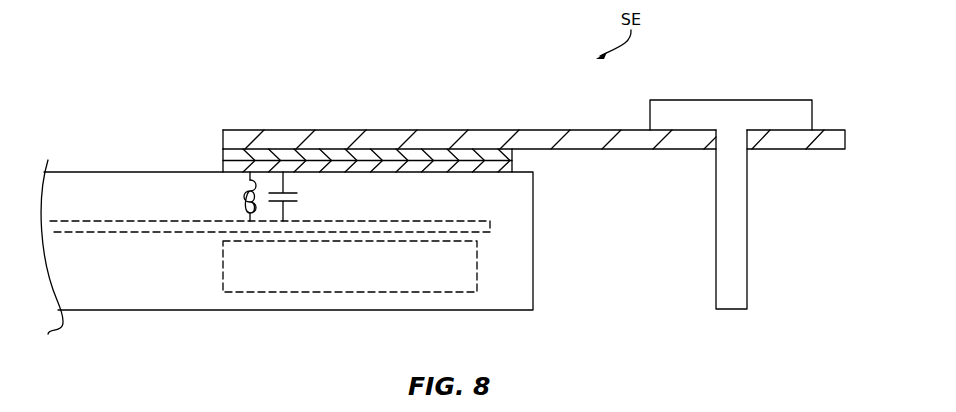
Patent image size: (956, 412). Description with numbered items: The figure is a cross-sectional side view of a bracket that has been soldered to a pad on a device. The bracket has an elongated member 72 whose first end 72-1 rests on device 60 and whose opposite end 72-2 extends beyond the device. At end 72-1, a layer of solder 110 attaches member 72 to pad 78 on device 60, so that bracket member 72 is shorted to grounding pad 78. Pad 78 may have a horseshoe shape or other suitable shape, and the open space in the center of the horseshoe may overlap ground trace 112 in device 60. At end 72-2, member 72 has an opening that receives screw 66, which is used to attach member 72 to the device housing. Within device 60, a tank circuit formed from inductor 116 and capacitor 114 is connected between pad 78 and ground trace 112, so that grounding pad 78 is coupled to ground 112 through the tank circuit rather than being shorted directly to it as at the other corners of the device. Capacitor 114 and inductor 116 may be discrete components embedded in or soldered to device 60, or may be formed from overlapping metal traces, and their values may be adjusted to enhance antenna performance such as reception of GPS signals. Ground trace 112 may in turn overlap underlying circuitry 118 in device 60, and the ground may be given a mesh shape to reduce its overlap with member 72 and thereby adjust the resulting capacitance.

The device 60 is at (99, 302).
The ground trace 112 is at (77, 220).
The circuitry 118 is at (223, 274).
The inductor 116 is at (226, 193).
The capacitor 114 is at (304, 193).
The solder 110 is at (232, 152).
The pad 78 is at (232, 164).
The member 72 is at (542, 137).
The end of member 72-1 is at (290, 137).
The end of member 72-2 is at (789, 145).
The screw 66 is at (732, 112).